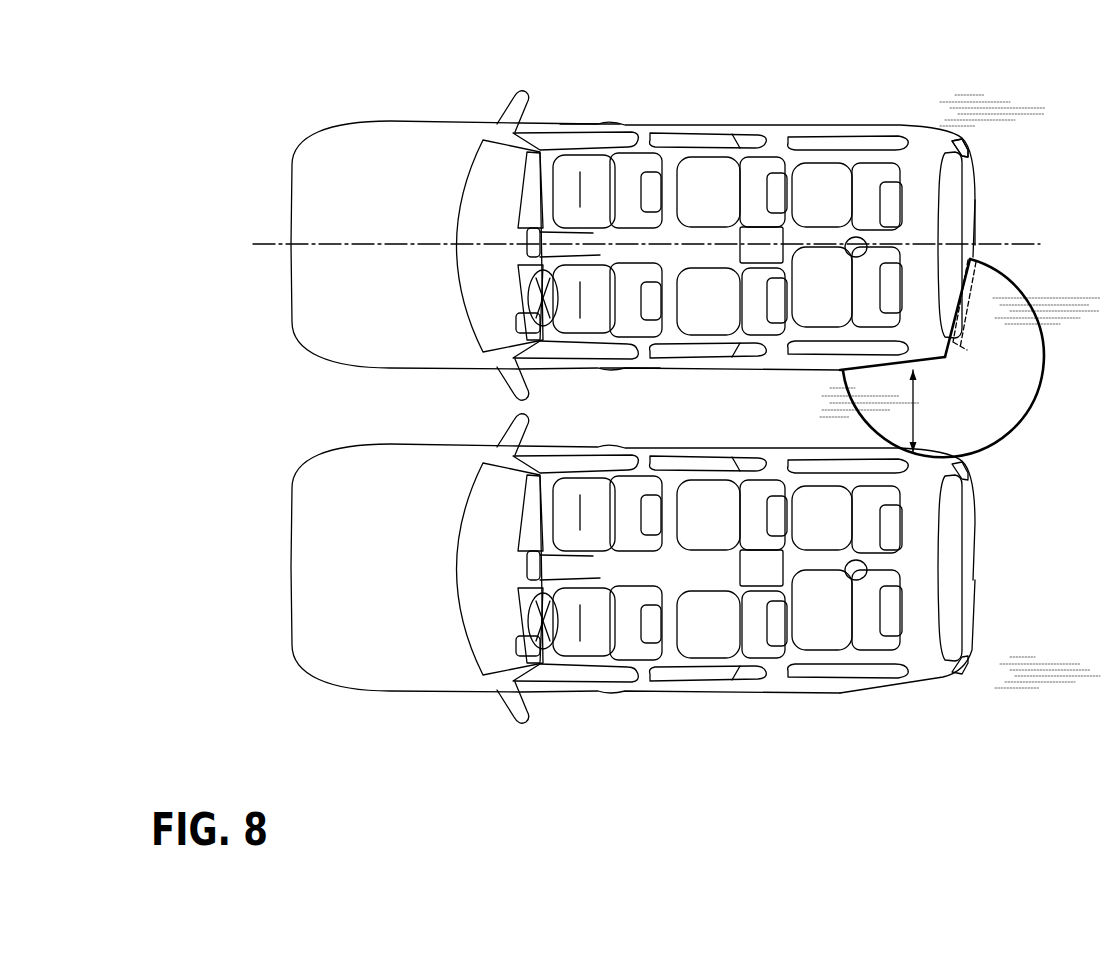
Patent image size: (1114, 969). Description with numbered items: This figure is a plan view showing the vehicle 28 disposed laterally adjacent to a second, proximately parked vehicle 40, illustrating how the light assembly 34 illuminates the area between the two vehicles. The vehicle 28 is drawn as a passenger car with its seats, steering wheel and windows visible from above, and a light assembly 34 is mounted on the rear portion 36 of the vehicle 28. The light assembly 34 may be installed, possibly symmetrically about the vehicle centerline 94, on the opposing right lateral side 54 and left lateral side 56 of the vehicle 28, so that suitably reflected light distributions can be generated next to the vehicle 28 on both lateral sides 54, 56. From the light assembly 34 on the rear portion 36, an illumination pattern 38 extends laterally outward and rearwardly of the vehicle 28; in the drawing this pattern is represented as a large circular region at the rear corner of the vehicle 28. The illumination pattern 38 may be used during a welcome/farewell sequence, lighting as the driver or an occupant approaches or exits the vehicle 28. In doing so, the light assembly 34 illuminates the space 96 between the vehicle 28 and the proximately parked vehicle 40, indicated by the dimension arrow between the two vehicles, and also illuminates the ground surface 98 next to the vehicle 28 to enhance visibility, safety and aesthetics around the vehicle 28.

The vehicle 28 is at (410, 108).
The right lateral side 54 is at (586, 118).
The left lateral side 56 is at (626, 380).
The light assembly 34 is at (972, 145).
The rear portion 36 is at (979, 214).
The vehicle centerline 94 is at (272, 242).
The ground surface 98 is at (1086, 363).
The space 96 is at (913, 416).
The illumination pattern 38 is at (999, 440).
The proximately parked vehicle 40 is at (459, 700).